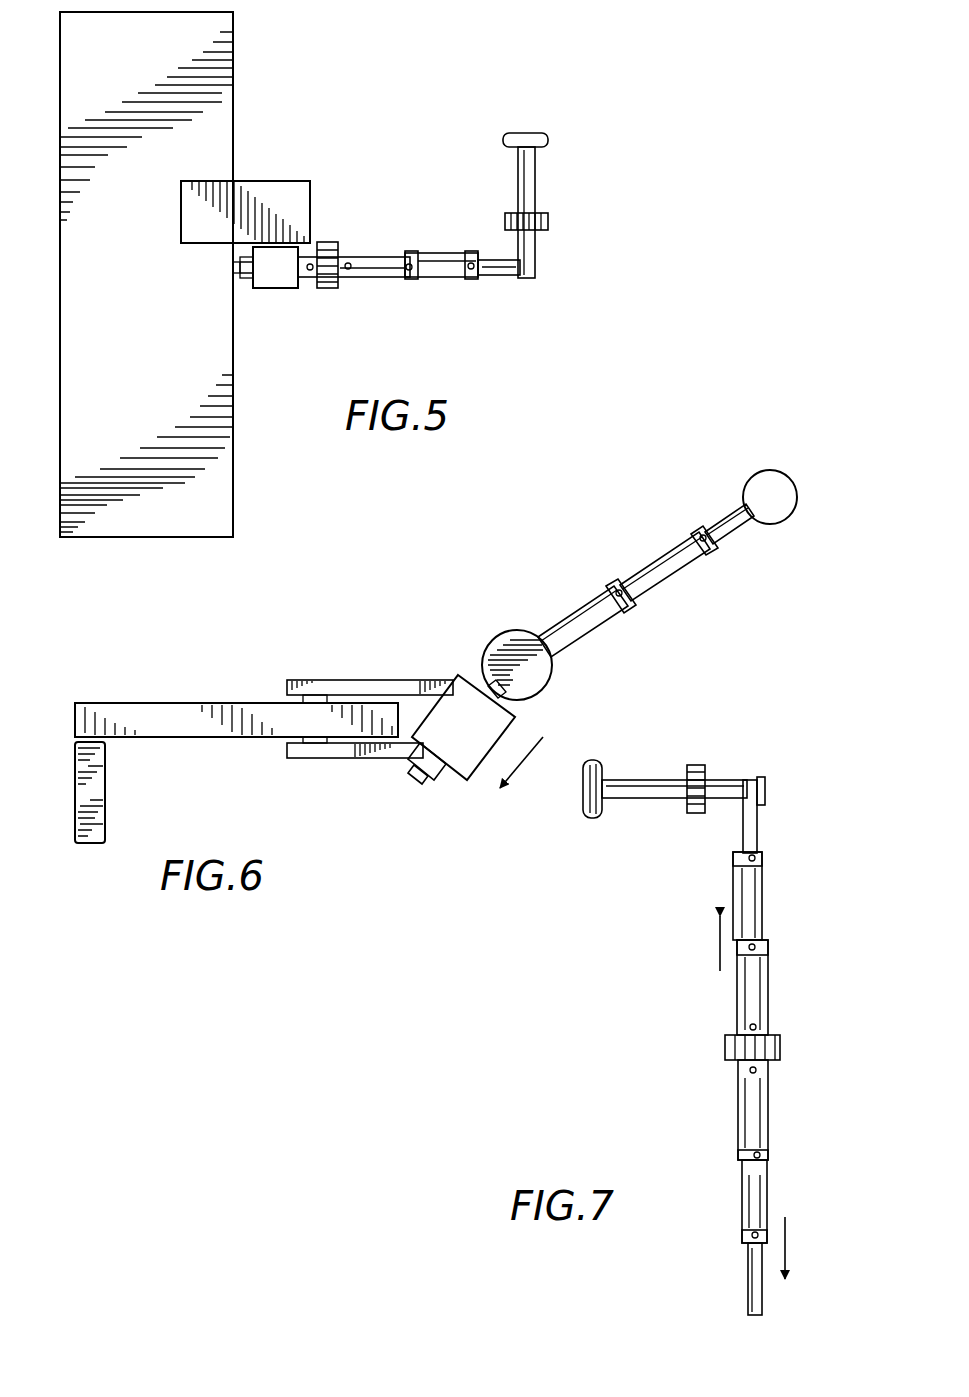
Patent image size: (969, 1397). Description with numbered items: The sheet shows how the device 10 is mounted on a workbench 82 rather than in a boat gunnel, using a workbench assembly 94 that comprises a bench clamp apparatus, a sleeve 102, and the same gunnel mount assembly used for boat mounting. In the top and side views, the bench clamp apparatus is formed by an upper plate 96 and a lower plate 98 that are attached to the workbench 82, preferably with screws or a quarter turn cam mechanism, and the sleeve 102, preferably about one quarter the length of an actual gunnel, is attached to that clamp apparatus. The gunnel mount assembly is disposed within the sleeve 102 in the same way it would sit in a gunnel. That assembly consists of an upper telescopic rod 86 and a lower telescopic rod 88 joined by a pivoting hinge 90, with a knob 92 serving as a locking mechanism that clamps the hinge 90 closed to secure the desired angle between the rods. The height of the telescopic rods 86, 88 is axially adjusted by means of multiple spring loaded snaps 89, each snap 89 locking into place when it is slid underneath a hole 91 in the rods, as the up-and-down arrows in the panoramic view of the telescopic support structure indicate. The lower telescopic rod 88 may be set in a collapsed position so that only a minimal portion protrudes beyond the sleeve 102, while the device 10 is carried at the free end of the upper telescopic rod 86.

In FIG. 5, the device 10 is at (546, 192).
In FIG. 6, the device 10 is at (792, 469).
In FIG. 7, the device 10 is at (715, 765).
In FIG. 5, the workbench 82 is at (236, 41).
In FIG. 6, the workbench 82 is at (195, 703).
In FIG. 5, the upper telescopic rod 86 is at (442, 262).
In FIG. 6, the upper telescopic rod 86 is at (675, 583).
In FIG. 7, the upper telescopic rod 86 is at (750, 896).
In FIG. 5, the lower telescopic rod 88 is at (304, 284).
In FIG. 6, the lower telescopic rod 88 is at (512, 699).
In FIG. 7, the lower telescopic rod 88 is at (760, 1099).
In FIG. 5, the spring loaded snaps 89 is at (407, 265).
In FIG. 6, the spring loaded snaps 89 is at (613, 587).
In FIG. 7, the spring loaded snaps 89 is at (759, 866).
In FIG. 5, the hinge 90 is at (335, 242).
In FIG. 7, the hinge 90 is at (782, 1040).
In FIG. 5, the hole 91 is at (413, 278).
In FIG. 6, the hole 91 is at (714, 548).
In FIG. 7, the hole 91 is at (755, 857).
In FIG. 6, the knob 92 is at (513, 630).
In FIG. 5, the workbench assembly 94 is at (438, 150).
In FIG. 6, the workbench assembly 94 is at (563, 573).
In FIG. 5, the upper plate 96 is at (311, 192).
In FIG. 6, the upper plate 96 is at (377, 680).
In FIG. 6, the lower plate 98 is at (370, 758).
In FIG. 5, the sleeve 102 is at (268, 290).
In FIG. 6, the sleeve 102 is at (473, 776).